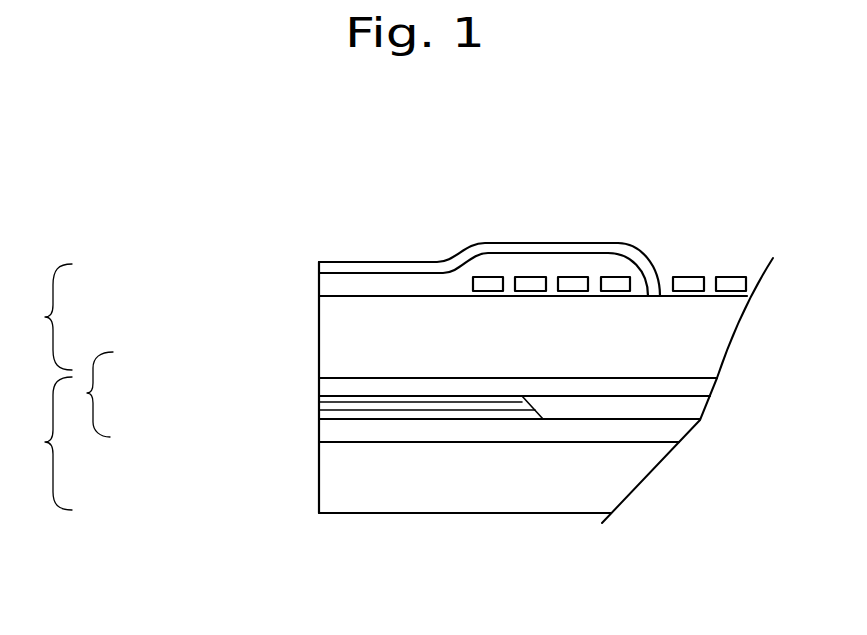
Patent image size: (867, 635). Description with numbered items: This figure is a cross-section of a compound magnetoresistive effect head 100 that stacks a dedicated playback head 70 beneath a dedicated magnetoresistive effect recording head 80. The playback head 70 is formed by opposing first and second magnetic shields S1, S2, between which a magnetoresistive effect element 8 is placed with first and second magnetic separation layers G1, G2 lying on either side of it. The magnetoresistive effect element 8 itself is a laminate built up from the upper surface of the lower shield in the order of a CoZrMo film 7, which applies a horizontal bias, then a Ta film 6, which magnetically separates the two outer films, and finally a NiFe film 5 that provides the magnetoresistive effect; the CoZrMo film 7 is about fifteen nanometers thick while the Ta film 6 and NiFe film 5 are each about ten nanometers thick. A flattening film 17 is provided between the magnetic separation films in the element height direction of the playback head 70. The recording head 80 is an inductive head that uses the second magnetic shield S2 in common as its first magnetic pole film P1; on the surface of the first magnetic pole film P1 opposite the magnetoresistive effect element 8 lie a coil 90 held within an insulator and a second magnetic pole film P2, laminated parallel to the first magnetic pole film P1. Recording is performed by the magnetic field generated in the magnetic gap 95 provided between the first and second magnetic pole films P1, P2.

The compound magnetoresistive effect head 100 is at (205, 184).
The second magnetic pole film P2 is at (375, 268).
The magnetic gap 95 is at (333, 285).
The coil 90 is at (620, 277).
The second magnetic shield S2 is at (348, 333).
The first magnetic pole film P1 is at (573, 358).
The second magnetic separation layer G2 is at (330, 386).
The NiFe film 5 is at (330, 397).
The Ta film 6 is at (330, 405).
The CoZrMo film 7 is at (330, 413).
The magnetoresistive effect element 8 is at (92, 394).
The dedicated magnetoresistive effect recording head 80 is at (44, 317).
The dedicated playback head 70 is at (44, 443).
The first magnetic separation layer G1 is at (365, 435).
The first magnetic shield S1 is at (410, 500).
The flattening film 17 is at (690, 433).